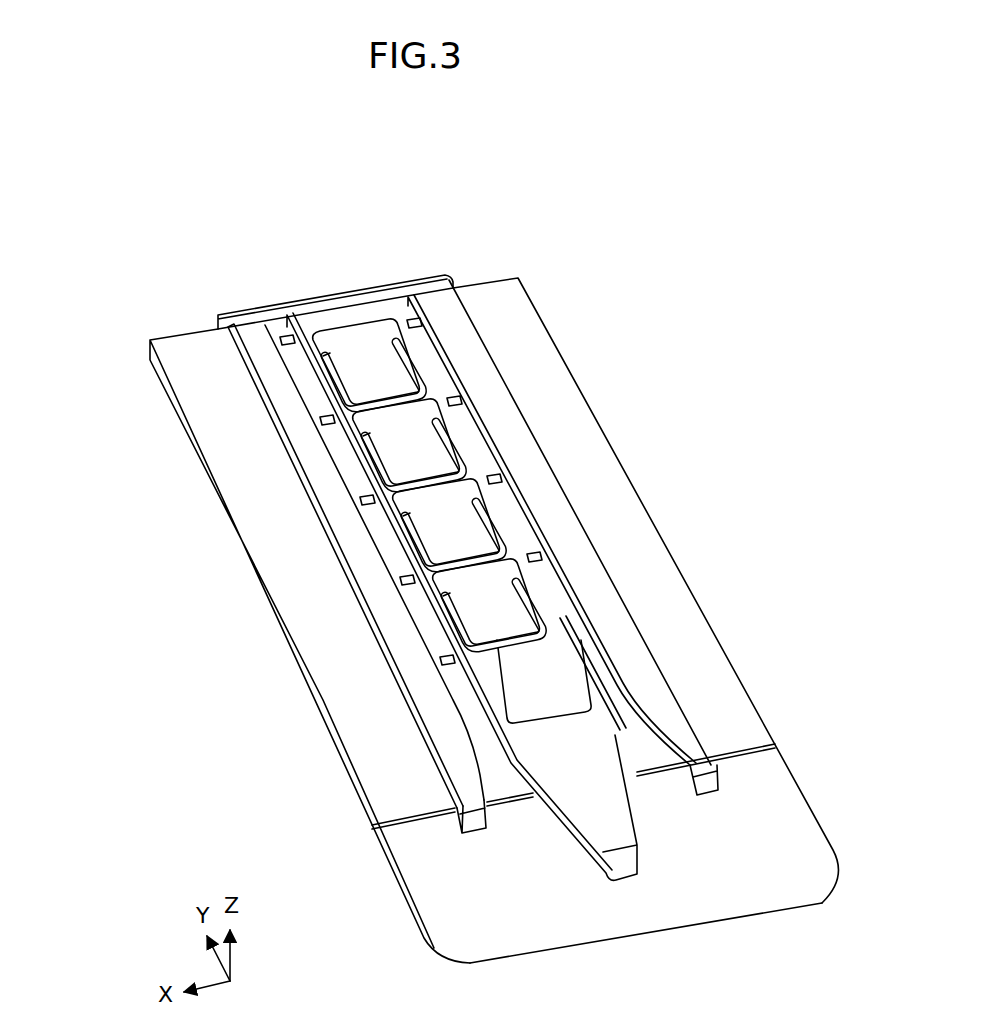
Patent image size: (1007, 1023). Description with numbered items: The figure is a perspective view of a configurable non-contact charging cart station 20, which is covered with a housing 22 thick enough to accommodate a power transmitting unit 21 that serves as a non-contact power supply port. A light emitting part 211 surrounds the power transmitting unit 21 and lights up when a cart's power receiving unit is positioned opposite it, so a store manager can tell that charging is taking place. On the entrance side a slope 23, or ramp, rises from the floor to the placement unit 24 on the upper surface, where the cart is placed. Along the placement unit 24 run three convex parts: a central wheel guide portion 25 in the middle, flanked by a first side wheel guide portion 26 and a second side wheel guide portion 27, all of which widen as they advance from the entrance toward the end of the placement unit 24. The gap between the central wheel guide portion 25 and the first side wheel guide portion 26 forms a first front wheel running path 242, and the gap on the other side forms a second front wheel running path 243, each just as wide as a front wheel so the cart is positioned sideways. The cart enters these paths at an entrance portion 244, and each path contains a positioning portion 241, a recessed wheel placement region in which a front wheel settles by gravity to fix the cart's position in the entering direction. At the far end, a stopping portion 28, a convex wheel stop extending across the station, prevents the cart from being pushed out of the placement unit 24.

The configurable non-contact charging cart station 20 is at (620, 222).
The power transmitting unit 21 is at (392, 360).
The light emitting part 211 is at (338, 380).
The housing 22 is at (500, 290).
The slope 23 is at (440, 905).
The placement unit 24 is at (256, 272).
The positioning portion 241 is at (413, 322).
The first front wheel running path 242 is at (440, 668).
The second front wheel running path 243 is at (578, 638).
The entrance portion 244 is at (716, 942).
The central wheel guide portion 25 is at (600, 755).
The first side wheel guide portion 26 is at (462, 740).
The second side wheel guide portion 27 is at (645, 676).
The stopping portion 28 is at (428, 278).